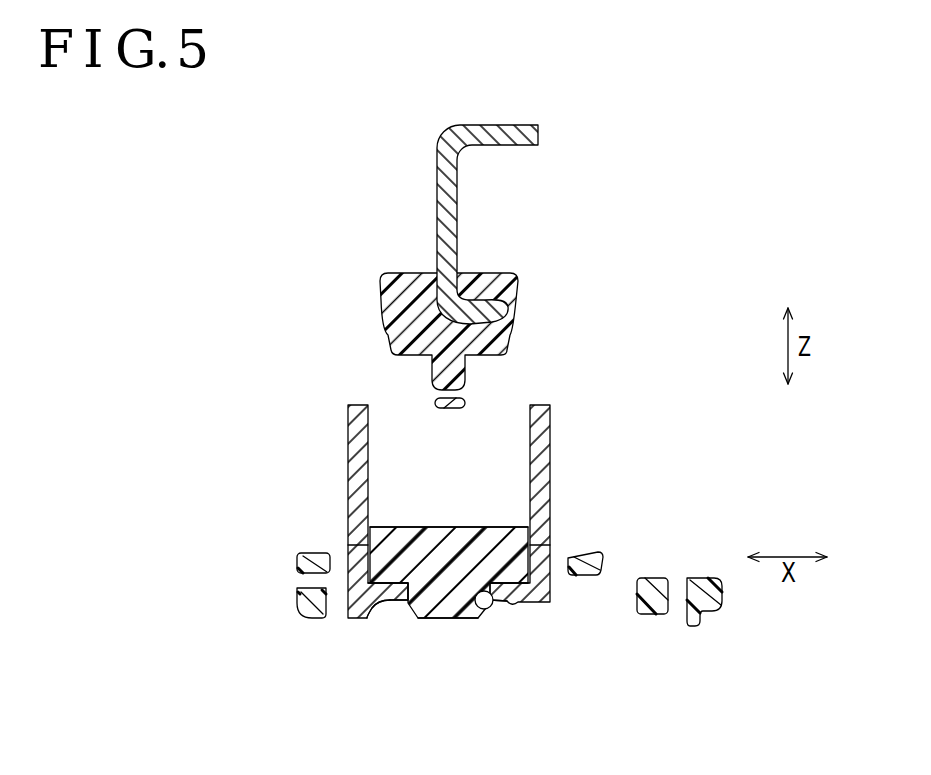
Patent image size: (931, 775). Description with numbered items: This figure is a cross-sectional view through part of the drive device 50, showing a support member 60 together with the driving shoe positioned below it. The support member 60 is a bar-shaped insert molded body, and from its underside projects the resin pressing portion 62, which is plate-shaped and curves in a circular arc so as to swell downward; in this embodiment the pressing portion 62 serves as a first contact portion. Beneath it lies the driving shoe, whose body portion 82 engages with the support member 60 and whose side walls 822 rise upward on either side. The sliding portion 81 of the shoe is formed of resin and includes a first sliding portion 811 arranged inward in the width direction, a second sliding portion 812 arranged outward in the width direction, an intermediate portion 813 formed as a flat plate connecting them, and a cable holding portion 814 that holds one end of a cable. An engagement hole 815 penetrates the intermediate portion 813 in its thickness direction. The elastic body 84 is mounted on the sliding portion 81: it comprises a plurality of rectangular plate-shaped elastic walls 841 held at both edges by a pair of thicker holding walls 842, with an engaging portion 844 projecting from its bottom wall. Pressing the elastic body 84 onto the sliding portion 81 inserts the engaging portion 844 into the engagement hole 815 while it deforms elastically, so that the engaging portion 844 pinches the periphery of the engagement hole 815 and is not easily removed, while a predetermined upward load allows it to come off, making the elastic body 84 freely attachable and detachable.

The drive device 50 is at (189, 182).
The support member 60 is at (436, 195).
The pressing portion 62 is at (450, 410).
The body portion 82 is at (449, 538).
The side wall of housing 822 is at (348, 430).
The holding wall 842 is at (350, 586).
The intermediate portion 813 is at (383, 608).
The elastic body 84 is at (449, 574).
The elastic wall 841 is at (492, 526).
The engaging portion 844 is at (450, 619).
The engagement hole 815 is at (485, 610).
The sliding portion 81 is at (502, 562).
The first sliding portion 811 is at (296, 558).
The second sliding portion 812 is at (603, 552).
The cable holding portion 814 is at (722, 603).